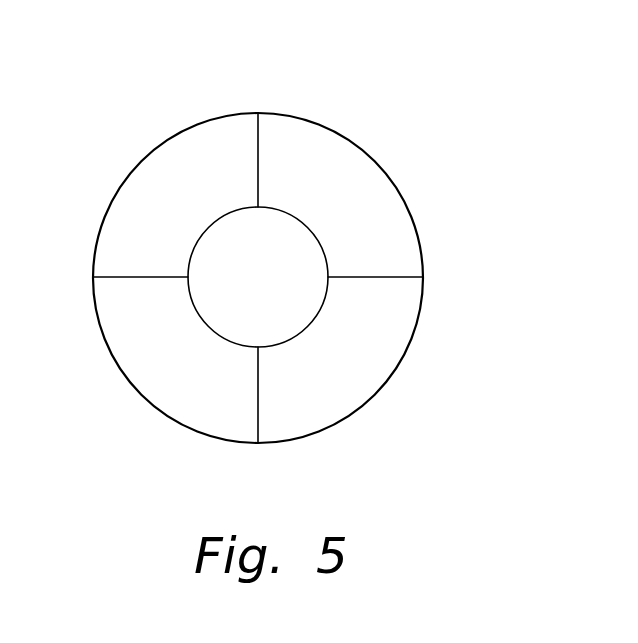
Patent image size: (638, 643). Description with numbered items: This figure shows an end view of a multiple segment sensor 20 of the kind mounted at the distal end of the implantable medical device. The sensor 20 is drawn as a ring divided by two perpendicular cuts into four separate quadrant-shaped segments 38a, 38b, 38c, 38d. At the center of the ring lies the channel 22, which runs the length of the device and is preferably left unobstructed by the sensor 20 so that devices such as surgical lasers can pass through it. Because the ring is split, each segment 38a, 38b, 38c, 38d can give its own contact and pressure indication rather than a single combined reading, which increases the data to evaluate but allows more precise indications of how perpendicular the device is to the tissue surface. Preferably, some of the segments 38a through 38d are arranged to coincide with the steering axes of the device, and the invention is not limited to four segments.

The sensor 20 is at (383, 90).
The channel 22 is at (259, 274).
The segment 38a is at (148, 372).
The segment 38b is at (375, 373).
The segment 38c is at (370, 172).
The segment 38d is at (155, 173).